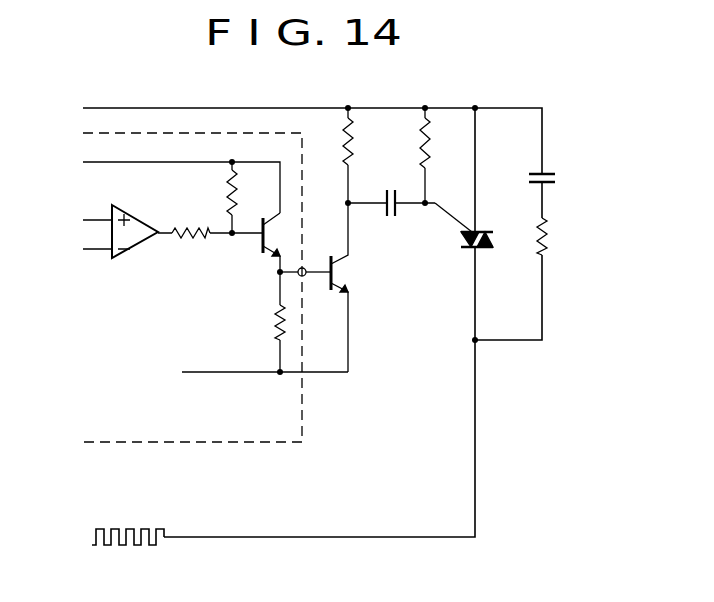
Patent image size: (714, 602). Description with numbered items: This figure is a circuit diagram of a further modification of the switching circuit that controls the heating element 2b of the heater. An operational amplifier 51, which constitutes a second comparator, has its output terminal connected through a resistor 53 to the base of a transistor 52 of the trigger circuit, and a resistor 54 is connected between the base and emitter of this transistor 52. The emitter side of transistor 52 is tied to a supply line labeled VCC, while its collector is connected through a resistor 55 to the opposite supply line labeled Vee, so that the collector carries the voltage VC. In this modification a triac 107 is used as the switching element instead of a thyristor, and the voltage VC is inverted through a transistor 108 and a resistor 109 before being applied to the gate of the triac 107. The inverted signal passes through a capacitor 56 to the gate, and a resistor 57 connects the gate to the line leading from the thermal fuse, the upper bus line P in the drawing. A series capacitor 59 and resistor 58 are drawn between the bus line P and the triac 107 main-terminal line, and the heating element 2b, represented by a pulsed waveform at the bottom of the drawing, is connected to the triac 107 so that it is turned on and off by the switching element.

The operational amplifier 51 is at (138, 213).
The transistor 52 is at (254, 239).
The resistor 53 is at (196, 238).
The resistor 54 is at (226, 195).
The resistor 55 is at (268, 325).
The capacitor 56 is at (398, 208).
The resistor 57 is at (418, 166).
The resistor 58 is at (550, 237).
The capacitor 59 is at (552, 168).
The triac 107 is at (456, 245).
The transistor 108 is at (346, 277).
The resistor 109 is at (349, 150).
The heating element 2b is at (148, 524).
The power supply line P is at (163, 110).
The positive supply voltage VCC is at (172, 162).
The voltage Vc VC is at (305, 266).
The negative supply voltage Vee is at (222, 375).